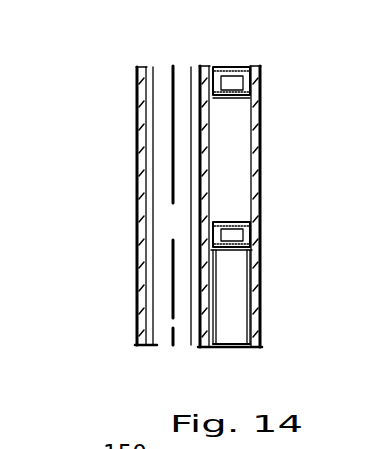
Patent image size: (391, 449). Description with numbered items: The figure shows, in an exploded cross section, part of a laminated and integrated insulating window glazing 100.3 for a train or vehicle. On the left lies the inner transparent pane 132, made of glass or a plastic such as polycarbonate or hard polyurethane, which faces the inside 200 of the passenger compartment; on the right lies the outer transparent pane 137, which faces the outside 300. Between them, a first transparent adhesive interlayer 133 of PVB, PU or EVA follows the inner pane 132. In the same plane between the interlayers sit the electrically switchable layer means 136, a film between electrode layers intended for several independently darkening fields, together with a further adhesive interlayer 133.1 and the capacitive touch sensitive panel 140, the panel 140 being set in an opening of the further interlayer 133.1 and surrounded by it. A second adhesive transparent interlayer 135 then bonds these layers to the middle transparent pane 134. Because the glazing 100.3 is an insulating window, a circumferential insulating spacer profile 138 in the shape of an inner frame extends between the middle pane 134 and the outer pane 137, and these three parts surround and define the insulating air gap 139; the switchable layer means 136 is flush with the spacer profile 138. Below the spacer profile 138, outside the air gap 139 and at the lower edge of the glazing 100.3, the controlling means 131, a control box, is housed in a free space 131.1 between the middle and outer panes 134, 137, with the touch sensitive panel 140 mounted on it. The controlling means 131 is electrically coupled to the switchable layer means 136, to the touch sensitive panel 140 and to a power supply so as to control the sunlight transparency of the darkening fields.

The laminated and integrated window glazing 100.3 is at (143, 58).
The inside 200 is at (102, 87).
The outside 300 is at (323, 87).
The controlling means 131 is at (230, 333).
The free space 131.1 is at (256, 245).
The inner transparent pane 132 is at (136, 131).
The first transparent interlayer 133 is at (137, 173).
The further adhesive interlayer 133.1 is at (173, 342).
The middle transparent pane 134 is at (210, 150).
The second adhesive transparent interlayer 135 is at (192, 218).
The electrically switchable layer means 136 is at (173, 191).
The outer transparent pane 137 is at (260, 322).
The insulating spacer profile 138 is at (232, 66).
The air gap 139 is at (237, 122).
The capacitive touch sensitive panel 140 is at (173, 258).